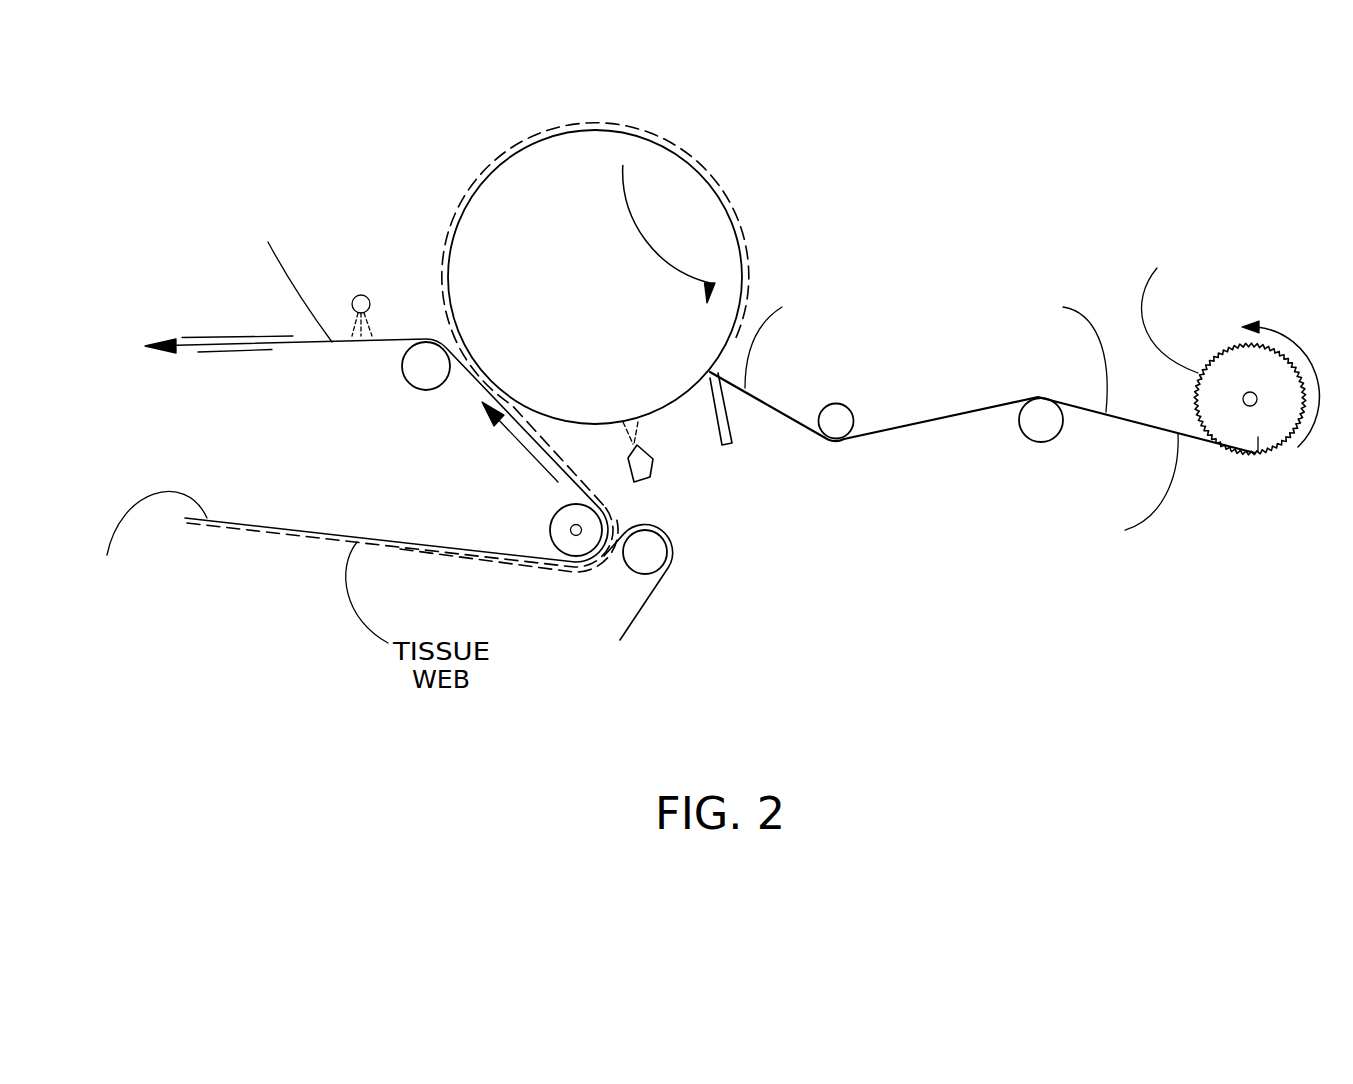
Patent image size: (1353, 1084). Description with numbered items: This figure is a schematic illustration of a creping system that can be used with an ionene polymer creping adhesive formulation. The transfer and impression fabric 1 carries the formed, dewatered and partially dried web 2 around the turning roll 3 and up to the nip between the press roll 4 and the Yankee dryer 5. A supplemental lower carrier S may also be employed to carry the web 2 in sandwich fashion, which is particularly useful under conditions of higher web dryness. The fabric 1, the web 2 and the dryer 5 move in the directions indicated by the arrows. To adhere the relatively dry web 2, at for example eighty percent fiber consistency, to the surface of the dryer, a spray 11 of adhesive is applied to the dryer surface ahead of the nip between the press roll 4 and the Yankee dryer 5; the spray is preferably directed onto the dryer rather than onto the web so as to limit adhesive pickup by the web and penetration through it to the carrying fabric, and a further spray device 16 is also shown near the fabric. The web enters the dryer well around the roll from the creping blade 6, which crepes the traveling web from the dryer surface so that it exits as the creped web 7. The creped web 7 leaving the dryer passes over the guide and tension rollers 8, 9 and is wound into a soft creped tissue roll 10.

The transfer and impression fabric 1 is at (265, 350).
The web 2 is at (568, 467).
The turning roll 3 is at (560, 513).
The press roll 4 is at (430, 352).
The Yankee dryer 5 is at (640, 354).
The creping blade 6 is at (728, 412).
The creped web 7 is at (778, 400).
The guide and tension roller 8 is at (843, 436).
The guide and tension roller 9 is at (1022, 426).
The soft creped tissue roll 10 is at (1258, 452).
The spray 11 is at (648, 453).
The spray device 16 is at (357, 295).
The supplemental lower carrier S is at (652, 597).